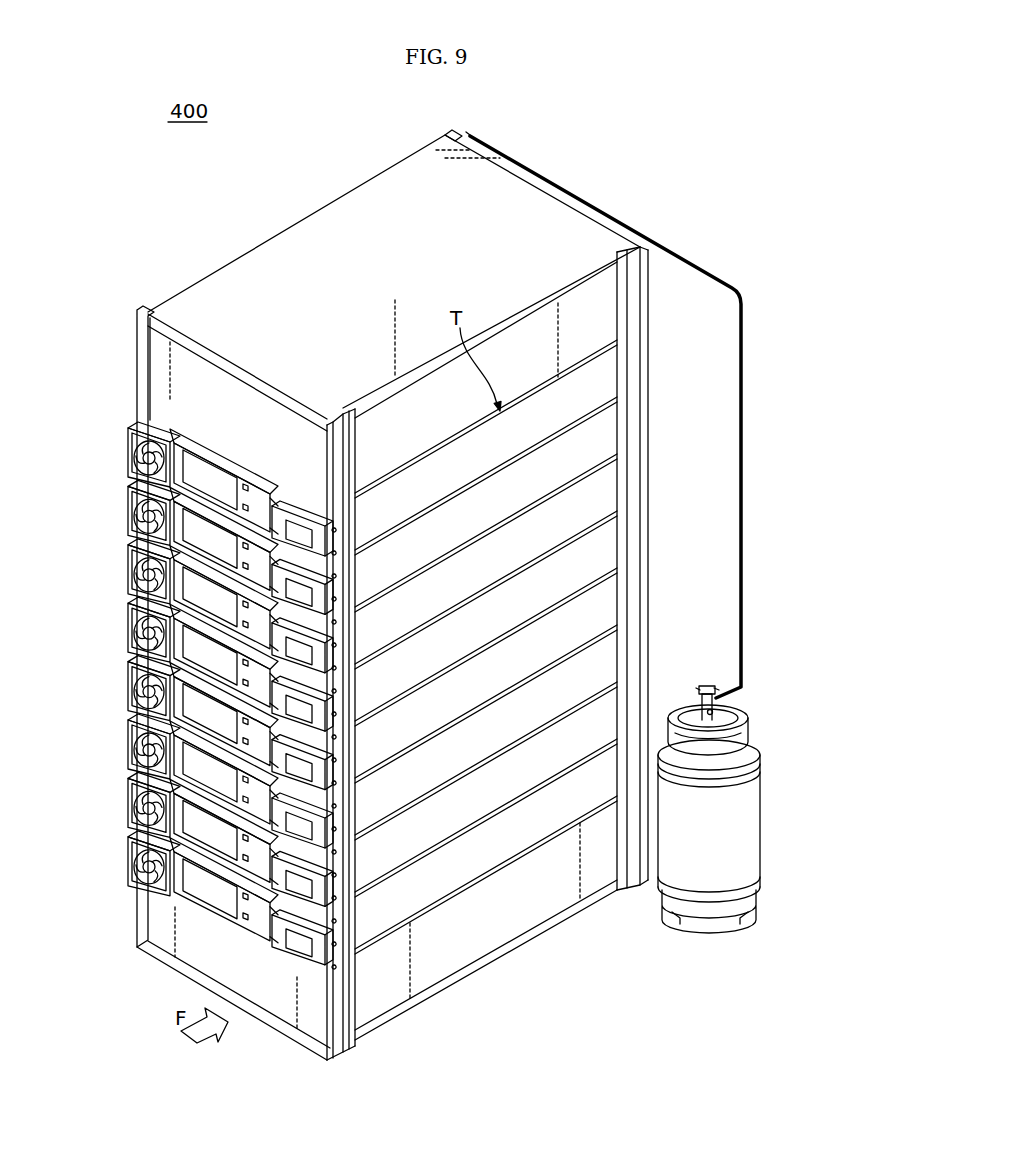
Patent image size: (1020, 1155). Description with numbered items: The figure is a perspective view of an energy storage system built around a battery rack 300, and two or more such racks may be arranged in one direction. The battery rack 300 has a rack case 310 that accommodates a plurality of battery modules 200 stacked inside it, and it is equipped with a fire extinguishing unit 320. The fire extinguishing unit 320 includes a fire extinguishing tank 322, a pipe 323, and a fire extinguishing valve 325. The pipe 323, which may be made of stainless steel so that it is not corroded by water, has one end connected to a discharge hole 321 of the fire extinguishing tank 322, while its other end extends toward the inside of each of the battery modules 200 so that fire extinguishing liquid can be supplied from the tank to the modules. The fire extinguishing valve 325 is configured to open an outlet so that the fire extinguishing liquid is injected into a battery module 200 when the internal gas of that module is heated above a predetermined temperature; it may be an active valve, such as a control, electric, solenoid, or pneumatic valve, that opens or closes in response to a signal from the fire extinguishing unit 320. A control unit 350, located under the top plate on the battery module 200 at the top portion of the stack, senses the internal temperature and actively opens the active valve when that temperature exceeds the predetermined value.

The battery rack 300 is at (282, 238).
The rack case 310 is at (137, 324).
The control unit 350 is at (155, 372).
The battery module 200 is at (120, 449).
The fire extinguishing unit 320 is at (710, 1058).
The discharge hole 321 is at (740, 717).
The fire extinguishing tank 322 is at (776, 780).
The pipe 323 is at (722, 276).
The fire extinguishing valve 325 is at (704, 684).